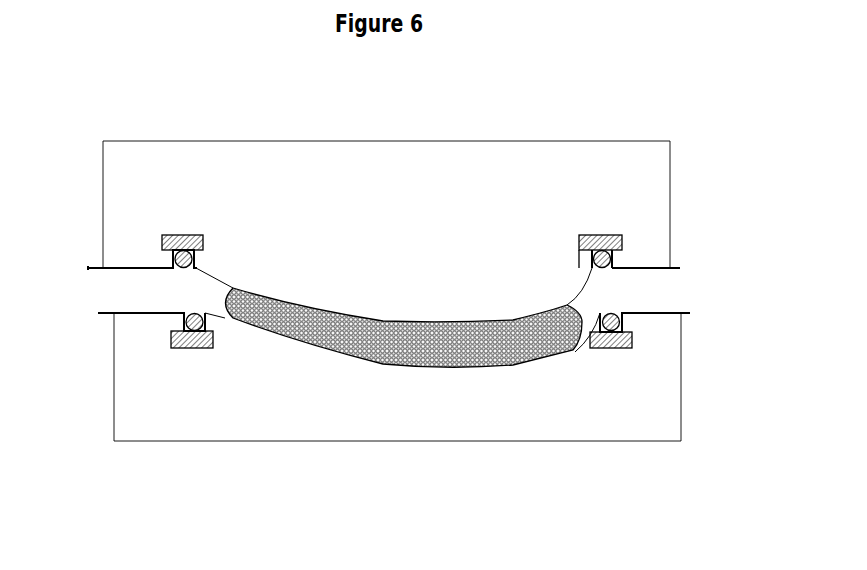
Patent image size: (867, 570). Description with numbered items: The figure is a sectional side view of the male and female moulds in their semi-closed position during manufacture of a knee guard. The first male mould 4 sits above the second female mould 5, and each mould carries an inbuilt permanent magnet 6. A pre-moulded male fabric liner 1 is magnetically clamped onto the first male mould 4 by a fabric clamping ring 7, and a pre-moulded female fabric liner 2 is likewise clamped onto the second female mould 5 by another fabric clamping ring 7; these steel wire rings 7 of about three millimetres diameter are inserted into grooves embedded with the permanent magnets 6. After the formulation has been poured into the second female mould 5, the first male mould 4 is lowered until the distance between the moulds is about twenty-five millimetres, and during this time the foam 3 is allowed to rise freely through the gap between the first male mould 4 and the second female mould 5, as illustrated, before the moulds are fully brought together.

The pre-moulded male fabric liner 1 is at (92, 270).
The pre-moulded female fabric liner 2 is at (685, 312).
The foam 3 is at (383, 327).
The first male mould 4 is at (492, 183).
The second female mould 5 is at (502, 405).
The permanent magnet 6 is at (178, 245).
The fabric clamping ring 7 is at (195, 322).